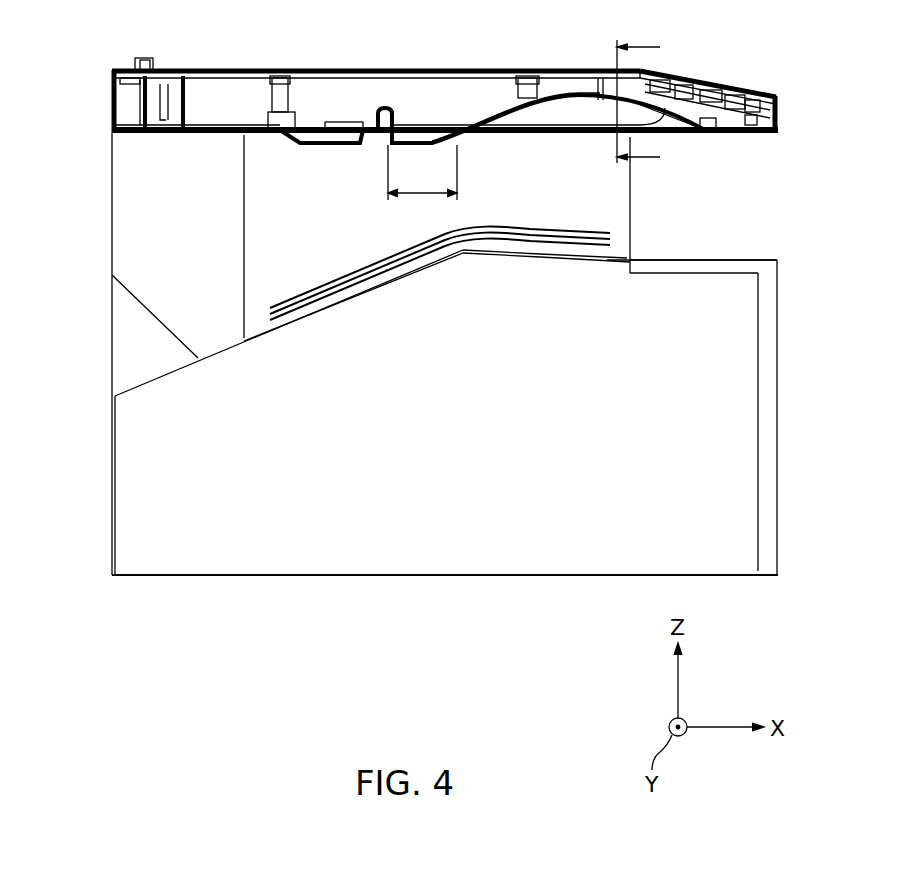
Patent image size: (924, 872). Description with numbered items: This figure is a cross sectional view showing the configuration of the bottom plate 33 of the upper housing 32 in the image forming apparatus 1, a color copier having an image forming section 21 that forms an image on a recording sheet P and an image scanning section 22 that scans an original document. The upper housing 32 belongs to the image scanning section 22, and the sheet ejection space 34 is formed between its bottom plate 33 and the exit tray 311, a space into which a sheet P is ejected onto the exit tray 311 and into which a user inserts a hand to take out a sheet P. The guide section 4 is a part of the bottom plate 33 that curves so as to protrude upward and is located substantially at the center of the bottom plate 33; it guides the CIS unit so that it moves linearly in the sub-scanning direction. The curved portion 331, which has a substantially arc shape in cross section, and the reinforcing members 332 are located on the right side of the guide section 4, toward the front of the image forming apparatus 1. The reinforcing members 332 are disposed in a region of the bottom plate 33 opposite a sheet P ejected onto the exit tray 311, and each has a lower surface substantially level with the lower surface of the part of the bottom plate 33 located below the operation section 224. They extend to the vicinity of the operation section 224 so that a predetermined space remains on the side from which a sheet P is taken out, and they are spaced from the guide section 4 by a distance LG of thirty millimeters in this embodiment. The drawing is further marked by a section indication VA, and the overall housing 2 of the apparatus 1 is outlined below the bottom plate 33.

The image forming apparatus 1 is at (710, 66).
The housing 2 is at (46, 140).
The image forming section 21 is at (108, 442).
The image scanning section 22 is at (108, 128).
The upper housing 32 is at (112, 92).
The bottom plate 33 is at (758, 140).
The sheet ejection space 34 is at (730, 215).
The guide section 4 is at (385, 108).
The curved portion 331 is at (497, 118).
The reinforcing members 332 is at (572, 120).
The exit tray 311 is at (672, 260).
The operation section 224 is at (740, 84).
The sheet P is at (583, 250).
The distance LG is at (422, 186).
The section line VA is at (657, 102).